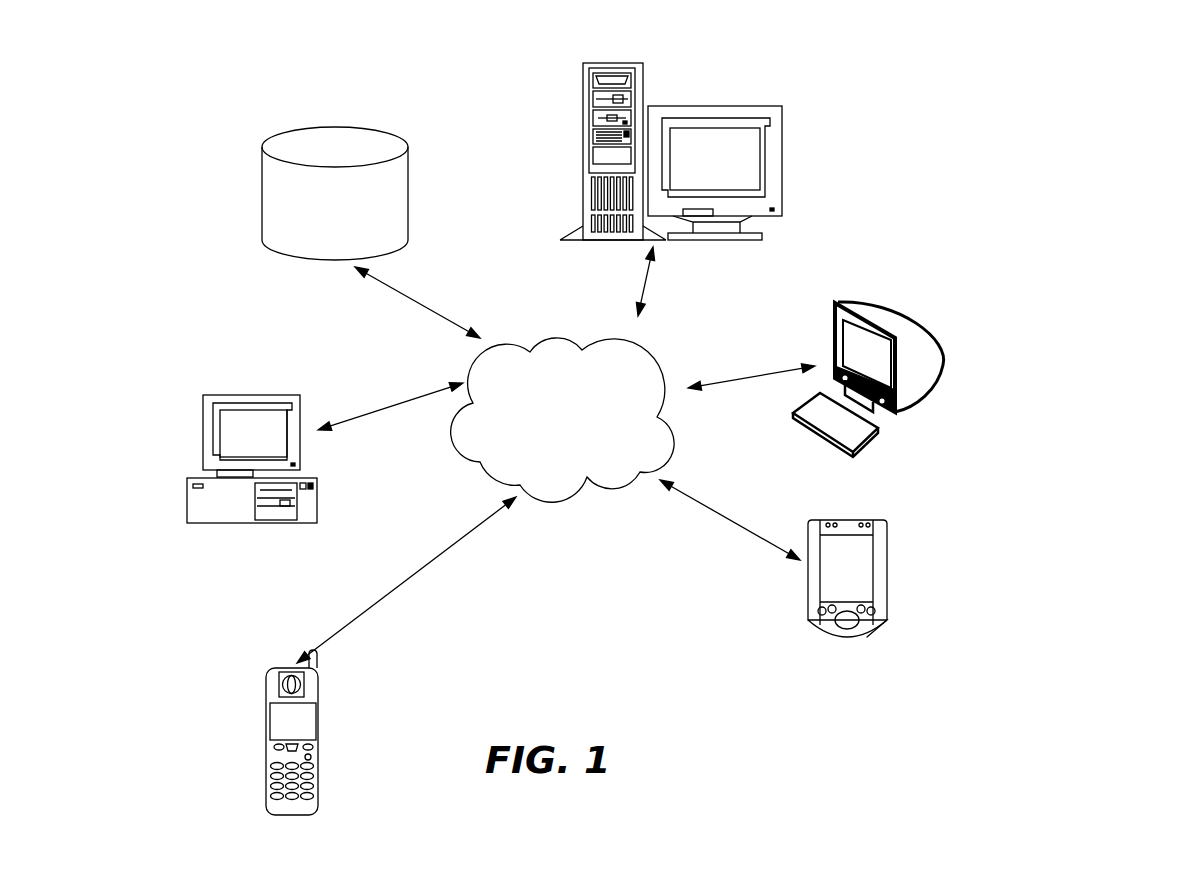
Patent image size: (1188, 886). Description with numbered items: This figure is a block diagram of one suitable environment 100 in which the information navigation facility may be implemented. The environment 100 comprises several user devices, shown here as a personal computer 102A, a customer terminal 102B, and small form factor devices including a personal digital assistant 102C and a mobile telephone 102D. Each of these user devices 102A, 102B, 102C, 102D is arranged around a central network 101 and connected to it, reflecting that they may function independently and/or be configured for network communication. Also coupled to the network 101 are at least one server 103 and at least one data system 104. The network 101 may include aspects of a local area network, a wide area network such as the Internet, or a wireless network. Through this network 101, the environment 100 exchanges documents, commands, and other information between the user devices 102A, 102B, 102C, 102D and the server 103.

The environment 100 is at (1033, 137).
The network 101 is at (555, 339).
The personal computer 102A is at (240, 395).
The customer terminal 102B is at (932, 338).
The personal digital assistant 102C is at (887, 560).
The mobile telephone 102D is at (322, 738).
The server 103 is at (720, 106).
The data system 104 is at (334, 127).